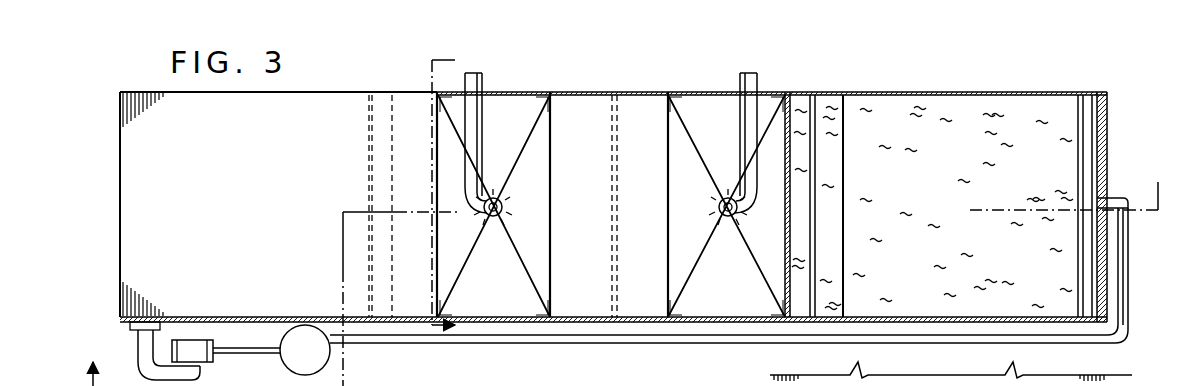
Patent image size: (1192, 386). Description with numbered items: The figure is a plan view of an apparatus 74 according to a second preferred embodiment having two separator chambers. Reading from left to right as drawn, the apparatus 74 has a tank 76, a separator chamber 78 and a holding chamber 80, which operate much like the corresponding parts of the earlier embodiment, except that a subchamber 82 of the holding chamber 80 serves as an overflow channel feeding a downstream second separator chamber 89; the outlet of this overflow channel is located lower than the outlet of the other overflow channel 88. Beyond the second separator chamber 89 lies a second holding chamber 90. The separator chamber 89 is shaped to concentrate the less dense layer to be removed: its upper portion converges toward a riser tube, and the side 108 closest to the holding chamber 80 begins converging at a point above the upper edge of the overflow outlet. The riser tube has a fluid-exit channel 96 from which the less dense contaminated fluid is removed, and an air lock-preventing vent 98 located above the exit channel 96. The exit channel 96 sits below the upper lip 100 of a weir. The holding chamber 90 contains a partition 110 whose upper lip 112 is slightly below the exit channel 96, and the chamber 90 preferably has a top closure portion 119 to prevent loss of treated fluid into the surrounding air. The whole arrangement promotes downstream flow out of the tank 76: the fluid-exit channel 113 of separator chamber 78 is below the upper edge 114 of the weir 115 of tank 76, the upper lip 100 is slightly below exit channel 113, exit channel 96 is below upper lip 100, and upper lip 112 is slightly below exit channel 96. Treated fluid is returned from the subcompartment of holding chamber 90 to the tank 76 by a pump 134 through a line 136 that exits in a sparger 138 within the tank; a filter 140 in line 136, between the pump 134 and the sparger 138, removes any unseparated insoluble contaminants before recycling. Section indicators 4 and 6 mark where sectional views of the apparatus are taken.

The apparatus 74 is at (395, 82).
The tank 76 is at (1001, 110).
The separator chamber 78 is at (707, 86).
The holding chamber 80 is at (668, 92).
The subchamber (overflow channel) 82 is at (597, 218).
The overflow channel 88 is at (800, 250).
The separator chamber 89 is at (523, 308).
The holding chamber 90 is at (150, 239).
The fluid-exit channel 96 is at (483, 82).
The air lock-preventing vent 98 is at (493, 217).
The upper lip 100 is at (618, 163).
The side 108 is at (545, 195).
The partition 110 is at (396, 186).
The upper lip 112 is at (368, 167).
The fluid-exit channel 113 is at (757, 82).
The upper edge 114 is at (812, 104).
The weir 115 is at (845, 128).
The top closure portion 119 is at (272, 171).
The pump 134 is at (198, 355).
The line 136 is at (655, 344).
The sparger 138 is at (1085, 166).
The filter 140 is at (321, 361).
The section line 4- 4 is at (625, 270).
The section line 6- 6 is at (454, 197).